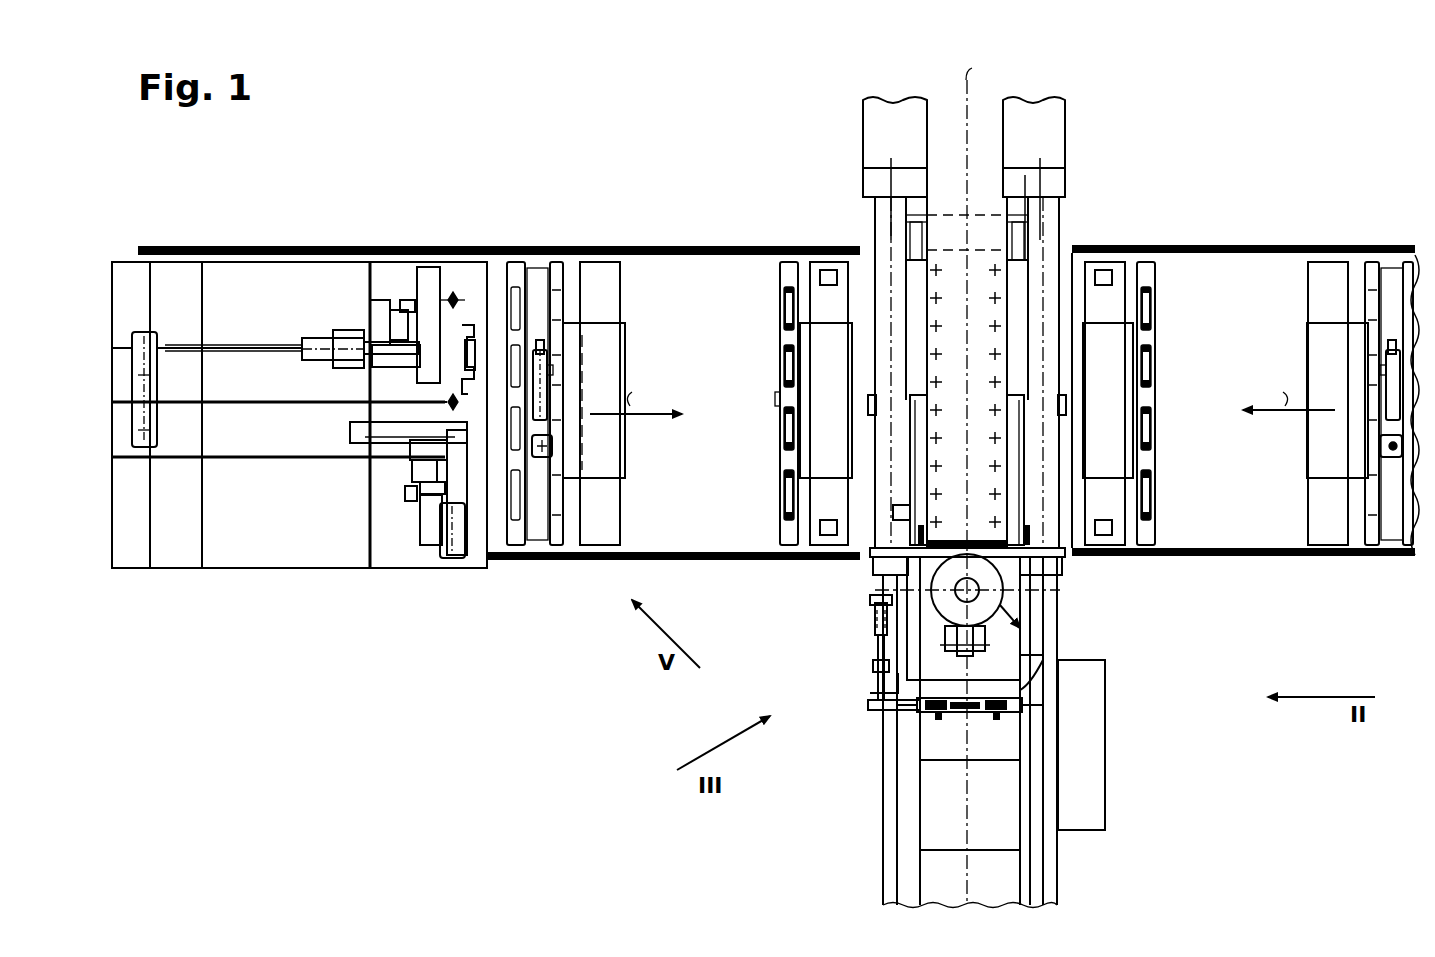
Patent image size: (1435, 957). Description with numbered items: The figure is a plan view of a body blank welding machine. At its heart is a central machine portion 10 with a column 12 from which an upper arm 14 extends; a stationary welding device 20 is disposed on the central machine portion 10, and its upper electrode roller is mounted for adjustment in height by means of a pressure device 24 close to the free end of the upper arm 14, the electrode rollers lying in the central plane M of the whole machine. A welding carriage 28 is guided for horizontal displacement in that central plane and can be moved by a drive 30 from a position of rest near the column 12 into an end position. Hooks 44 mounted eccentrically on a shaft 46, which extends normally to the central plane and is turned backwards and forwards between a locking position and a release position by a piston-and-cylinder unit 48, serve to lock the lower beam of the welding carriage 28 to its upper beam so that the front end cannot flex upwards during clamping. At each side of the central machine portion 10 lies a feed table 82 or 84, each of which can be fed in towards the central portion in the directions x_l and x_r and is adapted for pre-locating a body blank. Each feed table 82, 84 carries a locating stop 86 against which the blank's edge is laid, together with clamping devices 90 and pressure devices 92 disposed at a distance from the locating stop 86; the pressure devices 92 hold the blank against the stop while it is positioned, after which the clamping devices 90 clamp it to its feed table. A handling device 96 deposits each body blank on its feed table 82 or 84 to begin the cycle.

The central machine portion 10 is at (1070, 236).
The column 12 is at (1047, 125).
The upper arm 14 is at (950, 130).
The stationary welding device 20 is at (1027, 622).
The pressure device 24 is at (985, 596).
The welding carriage 28 is at (1043, 640).
The drive 30 is at (1082, 812).
The hooks 44 is at (990, 716).
The shaft 46 is at (1040, 682).
The piston-and-cylinder unit 48 is at (872, 640).
The feed table 82 is at (675, 282).
The feed table 84 is at (1235, 285).
The locating stop 86 is at (780, 488).
The clamping devices 90 is at (568, 370).
The pressure devices 92 is at (568, 446).
The handling device 96 is at (326, 238).